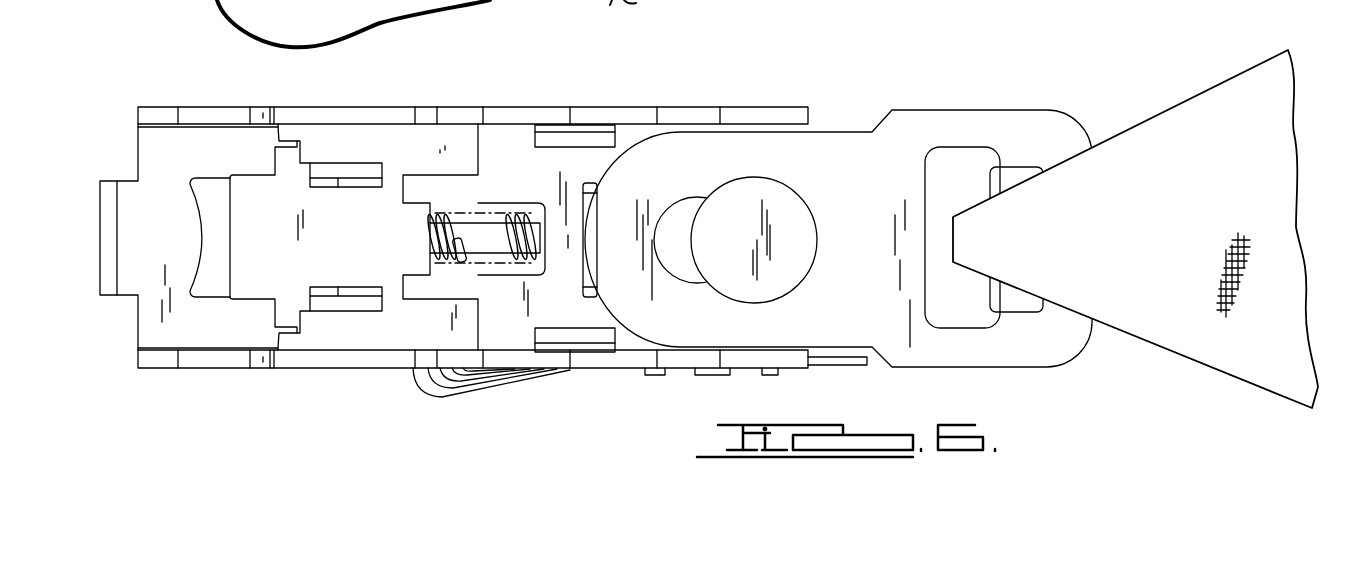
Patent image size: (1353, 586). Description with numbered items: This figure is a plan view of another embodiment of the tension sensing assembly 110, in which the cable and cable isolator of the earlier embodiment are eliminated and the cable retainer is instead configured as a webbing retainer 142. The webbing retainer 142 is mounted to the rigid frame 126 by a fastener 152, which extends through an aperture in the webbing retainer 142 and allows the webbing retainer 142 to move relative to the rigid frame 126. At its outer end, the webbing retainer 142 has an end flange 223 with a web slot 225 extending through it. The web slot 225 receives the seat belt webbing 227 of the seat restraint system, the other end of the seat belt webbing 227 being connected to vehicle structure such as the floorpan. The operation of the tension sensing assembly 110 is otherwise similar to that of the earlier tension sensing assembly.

The tension sensing assembly 110 is at (862, 63).
The rigid frame 126 is at (337, 370).
The webbing retainer 142 is at (850, 131).
The fastener 152 is at (763, 177).
The end flange 223 is at (1013, 122).
The web slot 225 is at (957, 320).
The seat belt webbing 227 is at (1213, 95).